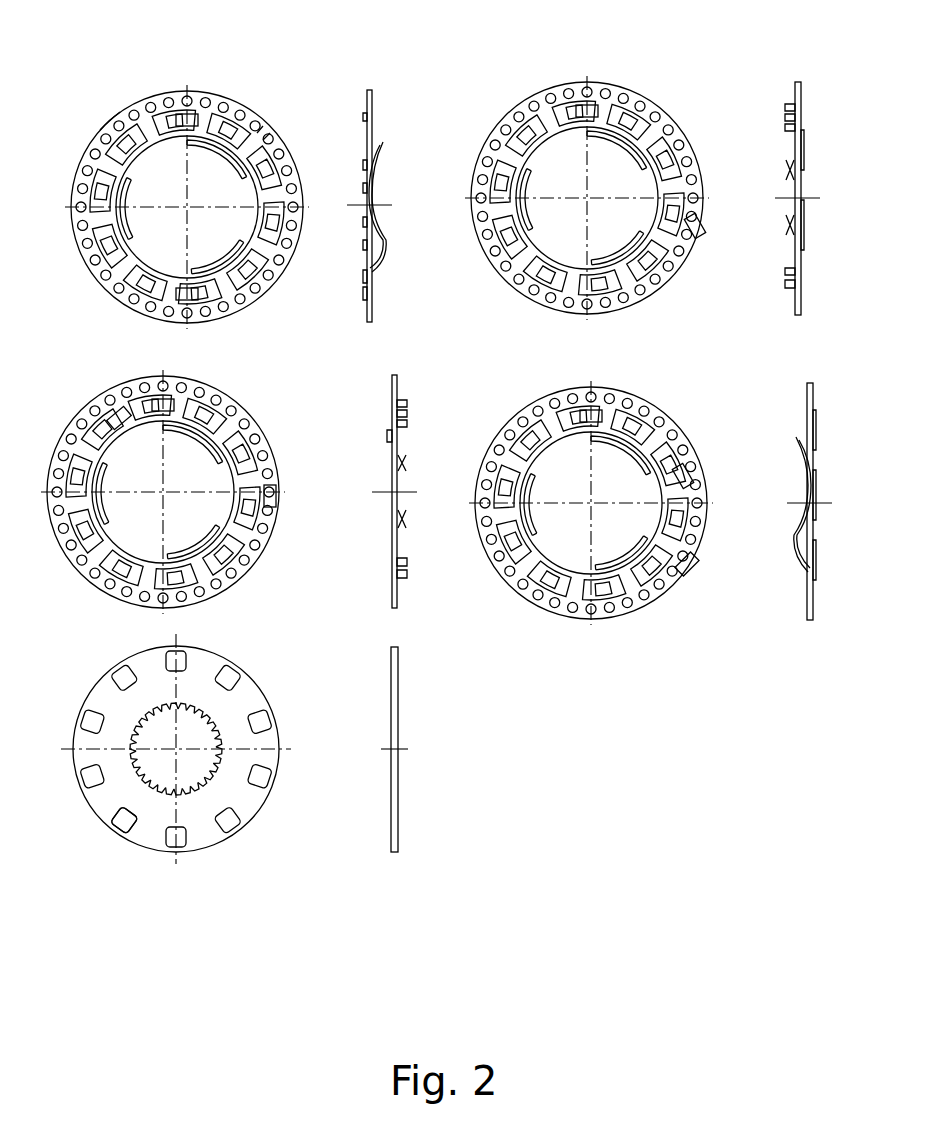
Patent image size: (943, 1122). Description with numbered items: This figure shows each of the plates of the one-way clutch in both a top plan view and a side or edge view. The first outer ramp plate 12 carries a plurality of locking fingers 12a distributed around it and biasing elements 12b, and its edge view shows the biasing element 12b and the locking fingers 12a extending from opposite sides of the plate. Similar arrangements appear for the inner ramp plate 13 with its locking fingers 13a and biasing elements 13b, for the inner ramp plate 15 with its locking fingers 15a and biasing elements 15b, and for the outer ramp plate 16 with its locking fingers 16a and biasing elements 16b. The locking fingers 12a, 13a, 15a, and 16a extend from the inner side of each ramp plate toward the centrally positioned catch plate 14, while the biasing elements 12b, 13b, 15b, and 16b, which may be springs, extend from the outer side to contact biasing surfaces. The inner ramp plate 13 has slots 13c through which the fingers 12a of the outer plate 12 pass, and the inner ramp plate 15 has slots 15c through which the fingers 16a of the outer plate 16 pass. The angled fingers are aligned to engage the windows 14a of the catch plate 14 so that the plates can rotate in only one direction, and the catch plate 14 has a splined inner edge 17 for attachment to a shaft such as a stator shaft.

The first outer ramp plate 12 is at (795, 83).
The locking fingers 12a is at (583, 103).
The biasing elements 12b is at (802, 135).
The inner ramp plate 13 is at (160, 93).
The locking fingers 13a is at (363, 115).
The biasing elements 13b is at (213, 110).
The slots 13c is at (100, 130).
The catch plate 14 is at (96, 817).
The windows 14a is at (120, 830).
The inner ramp plate 15 is at (808, 385).
The locking fingers 15a is at (683, 477).
The biasing elements 15b is at (797, 553).
The slots 15c is at (567, 412).
The outer ramp plate 16 is at (393, 378).
The locking fingers 16a is at (404, 402).
The biasing elements 16b is at (390, 435).
The splined inner edge 17 is at (207, 785).